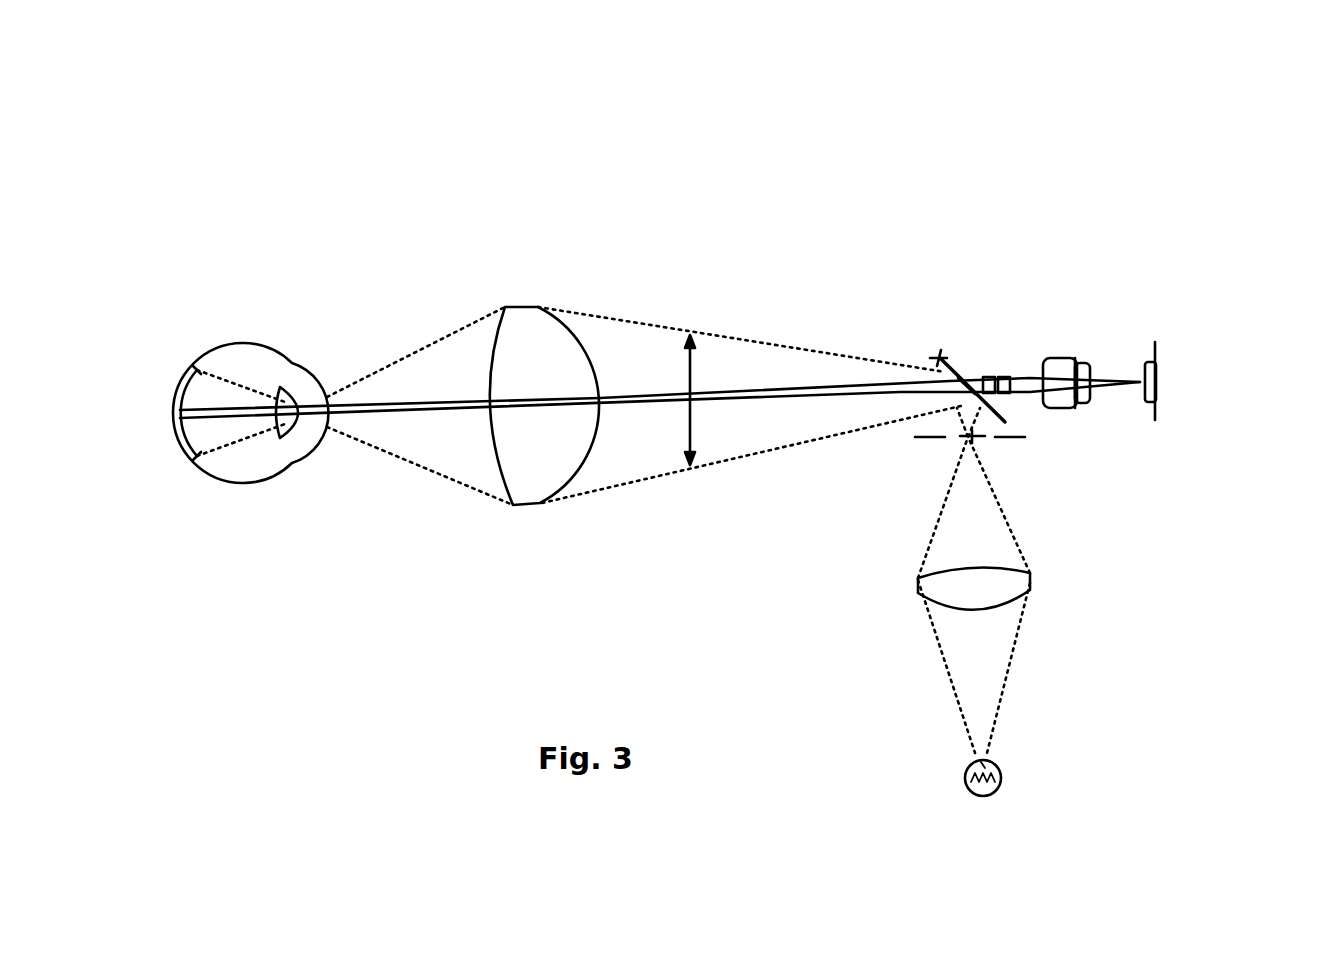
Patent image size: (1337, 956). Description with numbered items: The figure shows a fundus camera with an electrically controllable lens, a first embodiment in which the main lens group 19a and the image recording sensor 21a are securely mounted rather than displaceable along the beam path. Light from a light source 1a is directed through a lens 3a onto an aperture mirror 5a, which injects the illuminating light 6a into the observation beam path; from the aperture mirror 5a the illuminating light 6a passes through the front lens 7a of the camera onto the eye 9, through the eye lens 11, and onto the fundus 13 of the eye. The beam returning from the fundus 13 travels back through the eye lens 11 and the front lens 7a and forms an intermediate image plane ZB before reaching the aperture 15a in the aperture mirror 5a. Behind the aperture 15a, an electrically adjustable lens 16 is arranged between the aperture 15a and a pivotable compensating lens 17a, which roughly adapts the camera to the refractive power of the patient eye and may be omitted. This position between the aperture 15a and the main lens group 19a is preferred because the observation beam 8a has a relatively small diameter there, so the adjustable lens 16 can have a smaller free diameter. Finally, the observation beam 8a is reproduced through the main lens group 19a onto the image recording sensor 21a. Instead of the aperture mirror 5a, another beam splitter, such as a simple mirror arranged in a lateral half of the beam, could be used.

The light source 1a is at (965, 778).
The lens 3a is at (915, 583).
The aperture mirror 5a is at (945, 365).
The illuminating light 6a is at (627, 322).
The front lens 7a is at (529, 505).
The observation beam 8a is at (410, 414).
The eye 9 is at (237, 485).
The eye lens 11 is at (292, 430).
The fundus 13 is at (180, 440).
The aperture 15a is at (975, 378).
The electrically adjustable lens 16 is at (989, 378).
The pivotable compensating lens 17a is at (1006, 377).
The main lens group 19a is at (1063, 410).
The image recording sensor 21a is at (1158, 412).
The intermediate image plane ZB is at (700, 465).